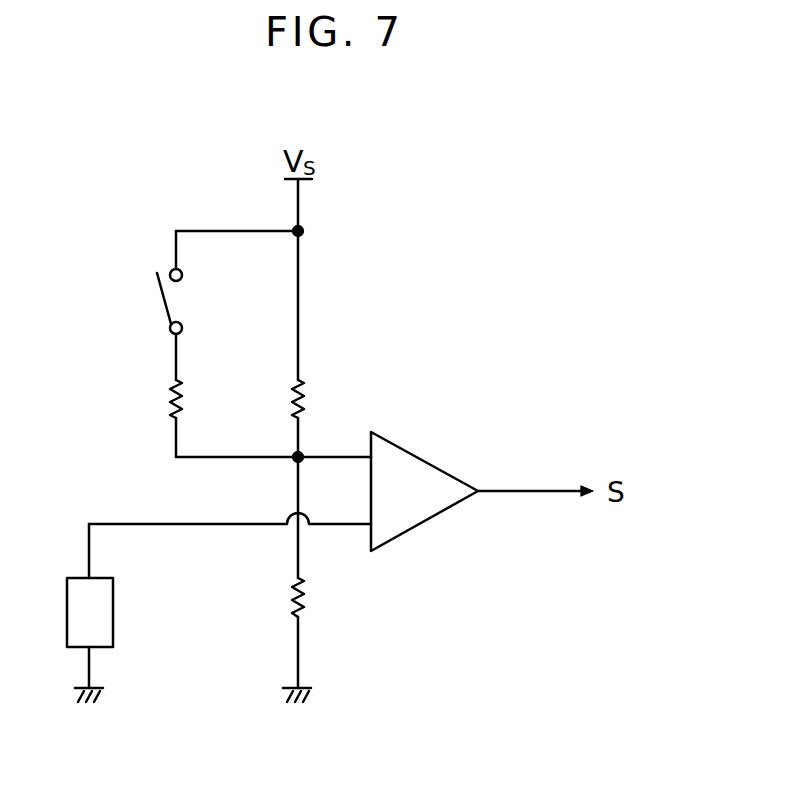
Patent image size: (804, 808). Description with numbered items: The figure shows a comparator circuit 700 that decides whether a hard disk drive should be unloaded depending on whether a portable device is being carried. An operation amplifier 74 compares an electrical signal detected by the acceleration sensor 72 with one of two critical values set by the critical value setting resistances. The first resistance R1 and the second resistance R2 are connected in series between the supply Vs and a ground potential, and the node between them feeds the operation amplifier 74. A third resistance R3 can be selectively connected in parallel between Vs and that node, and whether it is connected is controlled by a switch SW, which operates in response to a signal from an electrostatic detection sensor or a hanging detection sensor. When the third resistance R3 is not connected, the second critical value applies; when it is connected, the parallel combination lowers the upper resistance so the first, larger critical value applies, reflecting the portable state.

The sensing circuit 700 is at (548, 265).
The operation amplifier 74 is at (425, 458).
The acceleration sensor 72 is at (113, 613).
The first resistance R1 is at (321, 399).
The second resistance R2 is at (320, 597).
The third resistance R3 is at (198, 399).
The switch SW is at (193, 301).